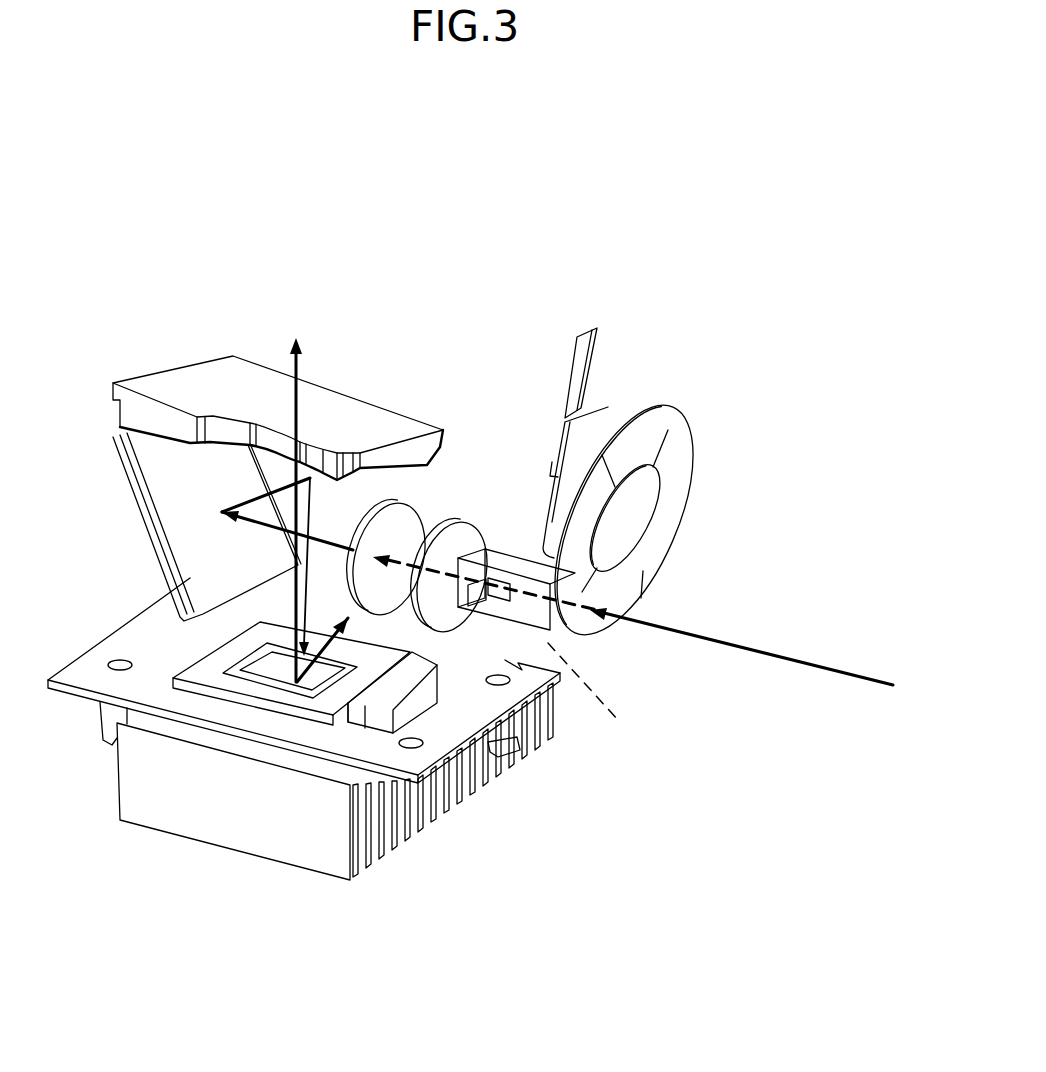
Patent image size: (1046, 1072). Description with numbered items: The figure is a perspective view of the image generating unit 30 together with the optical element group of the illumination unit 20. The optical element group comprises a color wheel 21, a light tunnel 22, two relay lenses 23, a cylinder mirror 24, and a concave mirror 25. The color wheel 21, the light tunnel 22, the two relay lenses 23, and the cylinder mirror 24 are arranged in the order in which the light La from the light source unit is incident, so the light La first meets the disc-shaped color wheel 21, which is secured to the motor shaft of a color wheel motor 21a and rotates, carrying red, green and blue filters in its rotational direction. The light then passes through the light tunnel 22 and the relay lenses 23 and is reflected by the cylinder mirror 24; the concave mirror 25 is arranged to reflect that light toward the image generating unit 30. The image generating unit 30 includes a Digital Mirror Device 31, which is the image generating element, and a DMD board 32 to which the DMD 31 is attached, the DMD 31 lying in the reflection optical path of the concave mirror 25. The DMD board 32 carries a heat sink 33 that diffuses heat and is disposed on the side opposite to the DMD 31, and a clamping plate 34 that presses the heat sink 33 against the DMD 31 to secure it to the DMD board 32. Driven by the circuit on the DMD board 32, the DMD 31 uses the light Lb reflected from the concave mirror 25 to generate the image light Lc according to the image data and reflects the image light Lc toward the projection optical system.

The illumination unit 20 is at (434, 296).
The color wheel 21 is at (650, 428).
The color wheel motor 21a is at (587, 370).
The light tunnel 22 is at (508, 547).
The relay lenses 23 is at (470, 533).
The cylinder mirror 24 is at (178, 477).
The concave mirror 25 is at (175, 387).
The image generating unit 30 is at (311, 880).
The Digital Mirror Device (DMD) 31 is at (270, 666).
The DMD board 32 is at (93, 675).
The heat sink 33 is at (413, 822).
The clamping plate 34 is at (510, 767).
The light La is at (763, 656).
The light reflected from the concave mirror Lb is at (293, 573).
The image light Lc is at (319, 372).